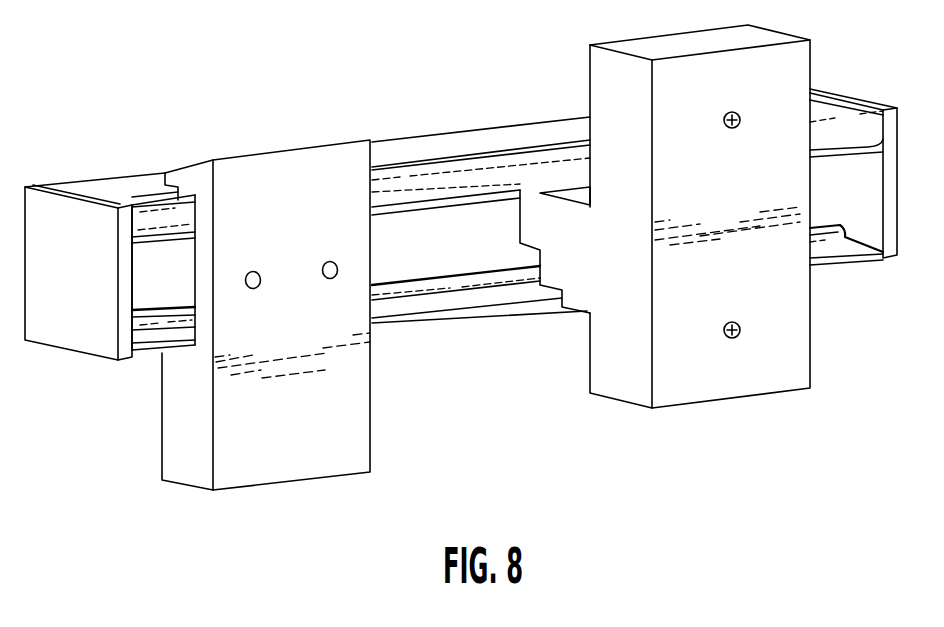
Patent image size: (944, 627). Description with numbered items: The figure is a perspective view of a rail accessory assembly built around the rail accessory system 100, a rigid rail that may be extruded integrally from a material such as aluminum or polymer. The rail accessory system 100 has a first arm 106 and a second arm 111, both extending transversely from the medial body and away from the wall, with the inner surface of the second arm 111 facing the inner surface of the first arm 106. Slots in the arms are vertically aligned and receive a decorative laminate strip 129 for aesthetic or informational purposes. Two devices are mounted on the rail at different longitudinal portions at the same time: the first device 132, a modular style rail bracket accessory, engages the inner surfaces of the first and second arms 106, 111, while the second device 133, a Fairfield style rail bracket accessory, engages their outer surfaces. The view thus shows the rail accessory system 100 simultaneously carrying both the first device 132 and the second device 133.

The rail accessory system 100 is at (396, 125).
The first arm 106 is at (470, 165).
The second arm 111 is at (541, 287).
The decorative laminate strip 129 is at (472, 232).
The first device 132 is at (640, 382).
The second device 133 is at (217, 467).